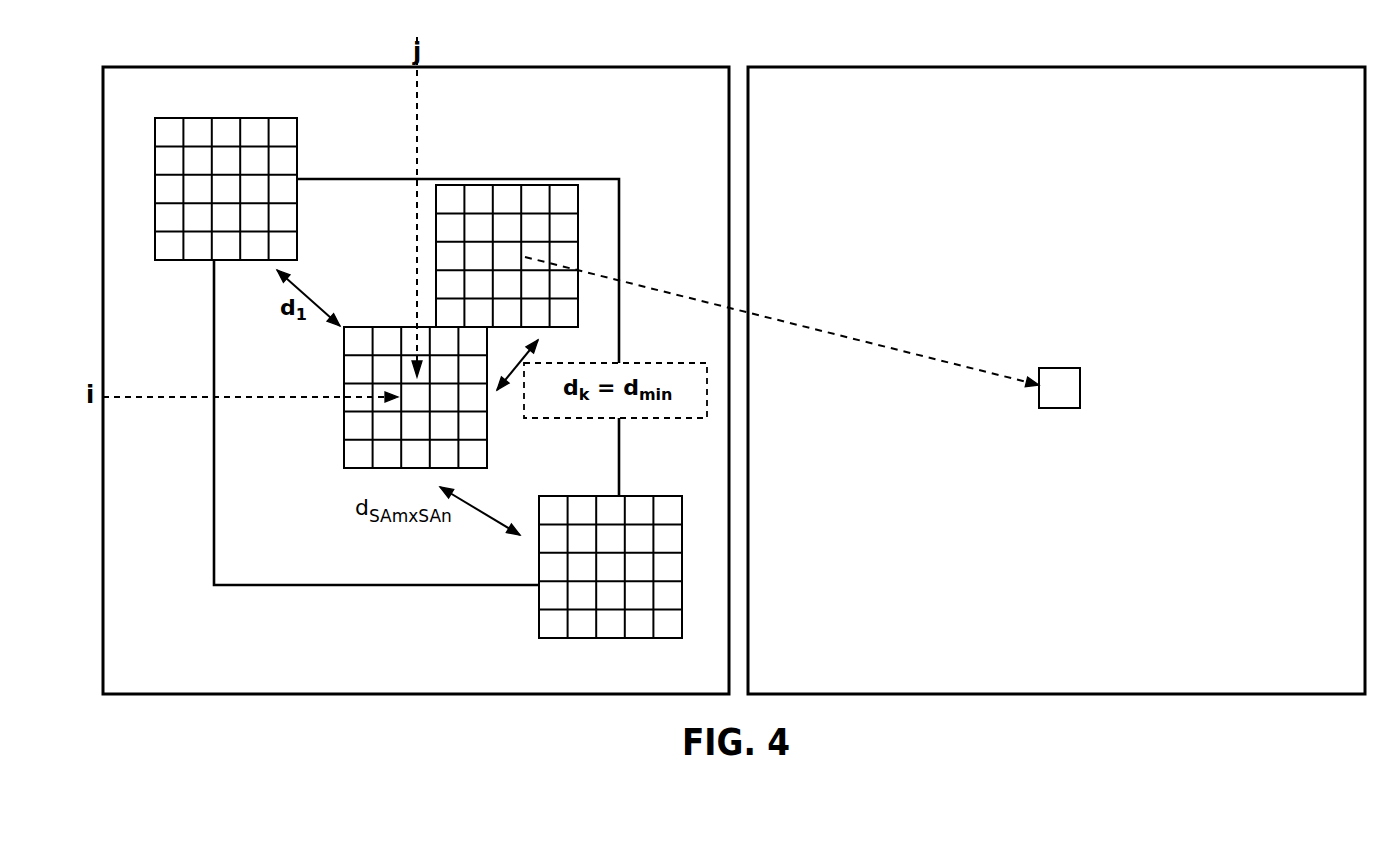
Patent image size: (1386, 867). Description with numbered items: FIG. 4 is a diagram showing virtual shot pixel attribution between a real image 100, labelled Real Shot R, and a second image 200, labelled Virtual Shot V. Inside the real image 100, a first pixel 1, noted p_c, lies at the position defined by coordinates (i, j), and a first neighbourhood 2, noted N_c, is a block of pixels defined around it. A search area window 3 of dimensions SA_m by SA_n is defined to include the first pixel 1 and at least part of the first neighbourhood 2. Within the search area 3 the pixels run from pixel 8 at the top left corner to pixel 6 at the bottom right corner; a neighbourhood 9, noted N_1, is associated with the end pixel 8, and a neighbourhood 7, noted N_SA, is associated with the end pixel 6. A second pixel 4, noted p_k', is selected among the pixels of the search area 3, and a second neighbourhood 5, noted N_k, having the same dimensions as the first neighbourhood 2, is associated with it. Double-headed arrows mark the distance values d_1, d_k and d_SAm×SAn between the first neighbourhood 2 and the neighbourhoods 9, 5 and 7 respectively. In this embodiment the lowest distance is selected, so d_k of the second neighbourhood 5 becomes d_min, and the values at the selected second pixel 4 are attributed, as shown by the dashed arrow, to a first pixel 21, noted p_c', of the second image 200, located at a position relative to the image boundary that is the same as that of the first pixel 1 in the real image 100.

The first pixel 1 is at (400, 392).
The first neighbourhood 2 is at (344, 431).
The search area window 3 is at (595, 232).
The second pixel 4 is at (512, 248).
The second neighbourhood 5 is at (573, 185).
The pixel at bottom right corner of search area 6 is at (603, 580).
The neighbourhood N_SA 7 is at (557, 638).
The pixel at top left corner of search area 8 is at (233, 177).
The neighbourhood N_1 9 is at (290, 118).
The first pixel of the second image 21 is at (1072, 368).
The real image 100 is at (648, 65).
The second image 200 is at (1305, 65).